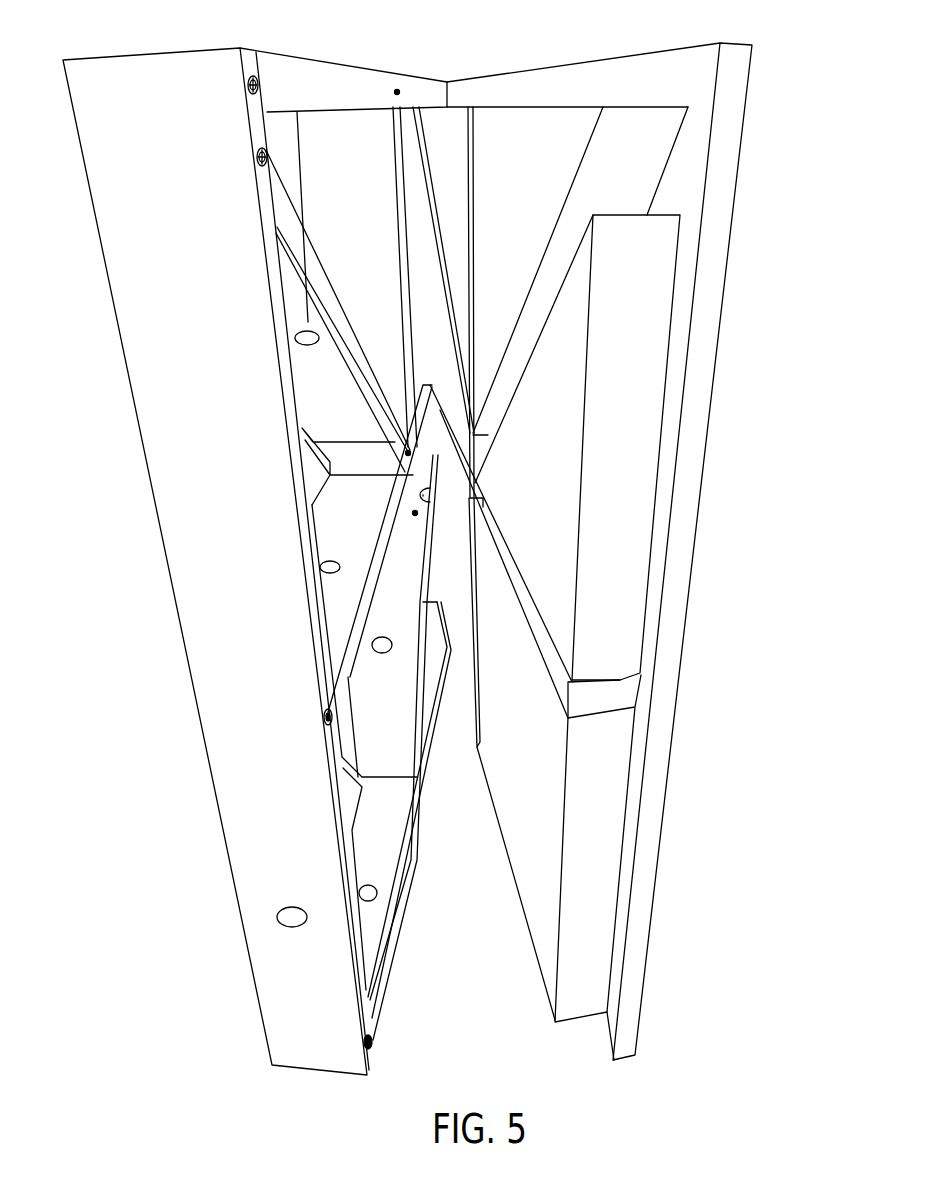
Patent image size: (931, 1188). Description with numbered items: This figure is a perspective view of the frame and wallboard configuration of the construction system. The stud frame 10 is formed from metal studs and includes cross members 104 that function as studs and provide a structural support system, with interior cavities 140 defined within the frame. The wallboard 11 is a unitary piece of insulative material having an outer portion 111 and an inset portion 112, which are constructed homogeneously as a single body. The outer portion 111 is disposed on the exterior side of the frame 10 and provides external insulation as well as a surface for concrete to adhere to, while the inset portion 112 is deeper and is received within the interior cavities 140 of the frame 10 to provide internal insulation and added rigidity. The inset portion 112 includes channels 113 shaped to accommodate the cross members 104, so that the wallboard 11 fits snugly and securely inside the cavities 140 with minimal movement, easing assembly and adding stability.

The stud frame 10 is at (238, 538).
The wallboard 11 is at (775, 76).
The cross member 104 is at (323, 280).
The outer portion 111 is at (707, 318).
The inset portion 112 is at (640, 453).
The channel 113 is at (630, 172).
The interior cavity 140 is at (385, 168).